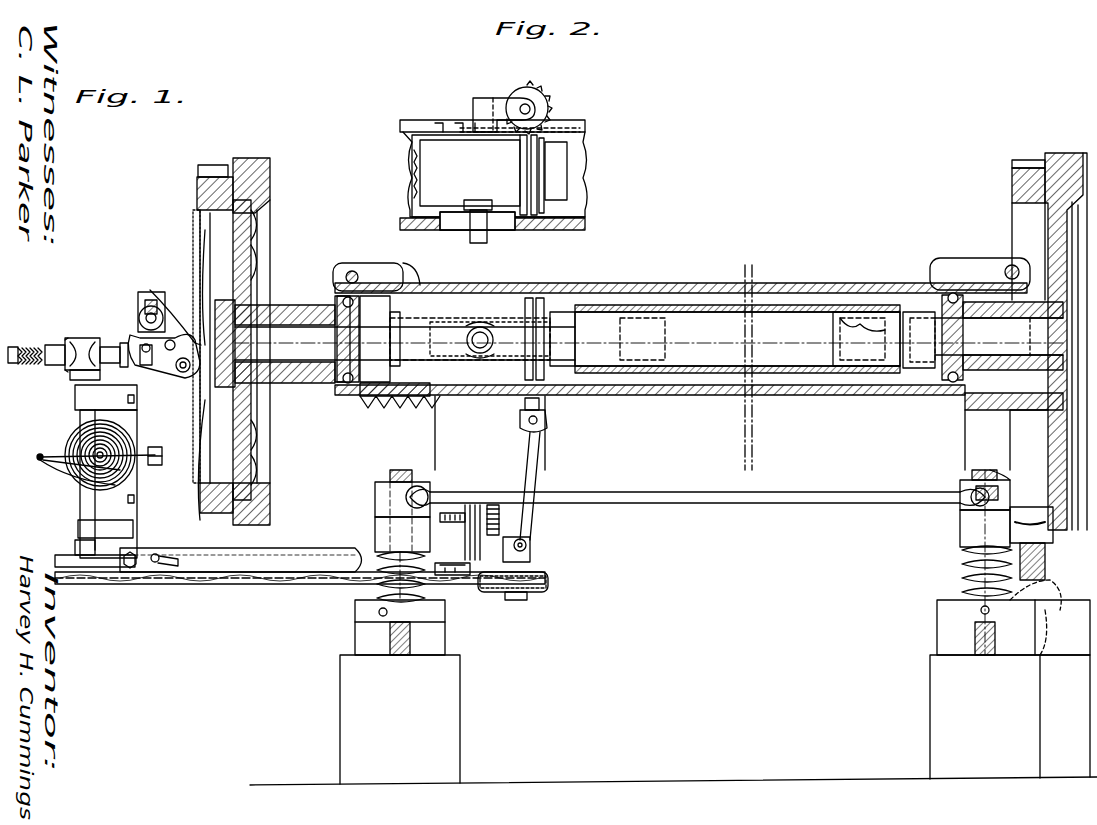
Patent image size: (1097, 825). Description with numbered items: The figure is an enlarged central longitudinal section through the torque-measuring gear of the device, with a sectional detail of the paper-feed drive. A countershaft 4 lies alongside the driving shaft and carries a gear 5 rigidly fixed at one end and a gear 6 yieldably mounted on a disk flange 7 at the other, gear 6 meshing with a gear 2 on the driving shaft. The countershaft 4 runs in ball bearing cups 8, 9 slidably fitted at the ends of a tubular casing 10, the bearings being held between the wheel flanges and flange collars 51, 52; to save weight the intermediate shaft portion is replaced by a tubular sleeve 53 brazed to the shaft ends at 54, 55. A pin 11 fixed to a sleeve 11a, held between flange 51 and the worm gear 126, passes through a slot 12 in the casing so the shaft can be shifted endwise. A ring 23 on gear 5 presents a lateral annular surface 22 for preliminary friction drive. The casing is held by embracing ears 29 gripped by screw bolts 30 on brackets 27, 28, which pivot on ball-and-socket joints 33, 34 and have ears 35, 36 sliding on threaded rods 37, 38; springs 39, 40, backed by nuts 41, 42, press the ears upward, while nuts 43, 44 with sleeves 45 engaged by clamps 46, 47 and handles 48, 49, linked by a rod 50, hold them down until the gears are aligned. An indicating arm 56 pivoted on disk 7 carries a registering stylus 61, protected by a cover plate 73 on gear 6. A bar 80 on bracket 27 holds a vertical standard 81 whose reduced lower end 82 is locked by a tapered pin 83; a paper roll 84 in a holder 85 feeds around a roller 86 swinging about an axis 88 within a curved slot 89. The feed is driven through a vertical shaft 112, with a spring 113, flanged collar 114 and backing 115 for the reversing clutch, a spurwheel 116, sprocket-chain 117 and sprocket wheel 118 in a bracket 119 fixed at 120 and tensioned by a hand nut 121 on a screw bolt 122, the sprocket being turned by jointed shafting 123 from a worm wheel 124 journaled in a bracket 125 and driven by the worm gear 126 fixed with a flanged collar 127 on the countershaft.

In FIG. 1, the gear 2 is at (345, 343).
In FIG. 1, the countershaft 4 is at (320, 360).
In FIG. 1, the gear 5 is at (1012, 170).
In FIG. 1, the gear 6 is at (210, 175).
In FIG. 1, the disk flange 7 is at (255, 445).
In FIG. 1, the ball bearing cup 8 is at (330, 300).
In FIG. 1, the ball bearing cup 9 is at (965, 300).
In FIG. 1, the tubular casing 10 is at (790, 283).
In FIG. 2, the tubular casing 10 is at (582, 225).
In FIG. 1, the pin 11 is at (478, 355).
In FIG. 2, the pin 11 is at (470, 238).
In FIG. 2, the sleeve 11a is at (425, 150).
In FIG. 2, the slot 12 is at (505, 230).
In FIG. 1, the lateral annular surface 22 is at (1080, 510).
In FIG. 1, the ring 23 is at (1060, 520).
In FIG. 1, the bracket 27 is at (436, 440).
In FIG. 1, the bracket 28 is at (965, 425).
In FIG. 1, the embracing ears 29 is at (385, 270).
In FIG. 1, the screw bolt 30 is at (348, 270).
In FIG. 1, the pivot 33 is at (360, 610).
In FIG. 1, the pivot 34 is at (1040, 590).
In FIG. 1, the ear 35 is at (375, 520).
In FIG. 1, the ear 36 is at (960, 555).
In FIG. 1, the threaded rod 37 is at (385, 658).
In FIG. 1, the threaded rod 38 is at (975, 630).
In FIG. 1, the spring 39 is at (375, 565).
In FIG. 1, the spring 40 is at (962, 575).
In FIG. 1, the nut 41 is at (388, 625).
In FIG. 1, the nut 42 is at (1010, 640).
In FIG. 1, the nut 43 is at (375, 510).
In FIG. 1, the nut 44 is at (962, 532).
In FIG. 1, the sleeve 45 is at (972, 478).
In FIG. 1, the embracing clamp 46 is at (392, 470).
In FIG. 1, the embracing clamp 47 is at (1010, 480).
In FIG. 1, the operating handle 48 is at (530, 440).
In FIG. 1, the operating handle 49 is at (960, 505).
In FIG. 1, the rod 50 is at (700, 503).
In FIG. 1, the flange collar 51 is at (400, 290).
In FIG. 1, the flange collar 52 is at (920, 305).
In FIG. 1, the tubular sleeve 53 is at (700, 305).
In FIG. 1, the brazed joint 54 is at (612, 373).
In FIG. 1, the brazed joint 55 is at (865, 373).
In FIG. 1, the indicating arm 56 is at (195, 268).
In FIG. 1, the registering stylus 61 is at (175, 340).
In FIG. 1, the cover plate 73 is at (200, 490).
In FIG. 1, the bar 80 is at (218, 560).
In FIG. 1, the vertical standard 81 is at (115, 420).
In FIG. 1, the reduced lower end 82 is at (150, 585).
In FIG. 1, the tapered pin 83 is at (162, 583).
In FIG. 1, the roll 84 is at (75, 440).
In FIG. 1, the holder 85 is at (90, 480).
In FIG. 1, the roller 86 is at (145, 320).
In FIG. 1, the axis 88 is at (190, 372).
In FIG. 1, the curved slot 89 is at (165, 300).
In FIG. 1, the vertical shaft 112 is at (80, 522).
In FIG. 1, the spring 113 is at (58, 340).
In FIG. 1, the flanged collar 114 is at (72, 345).
In FIG. 1, the backing 115 is at (14, 345).
In FIG. 1, the spurwheel 116 is at (72, 585).
In FIG. 1, the sprocket-chain 117 is at (237, 585).
In FIG. 1, the sprocket wheel 118 is at (548, 585).
In FIG. 1, the bracket 119 is at (540, 570).
In FIG. 1, the adjustable fixing 120 is at (460, 590).
In FIG. 1, the hand nut 121 is at (500, 513).
In FIG. 1, the screw bolt 122 is at (452, 527).
In FIG. 1, the jointed shafting 123 is at (530, 545).
In FIG. 2, the worm wheel 124 is at (550, 95).
In FIG. 2, the bracket 125 is at (485, 105).
In FIG. 2, the worm gear 126 is at (540, 135).
In FIG. 2, the flanged collar 127 is at (540, 155).